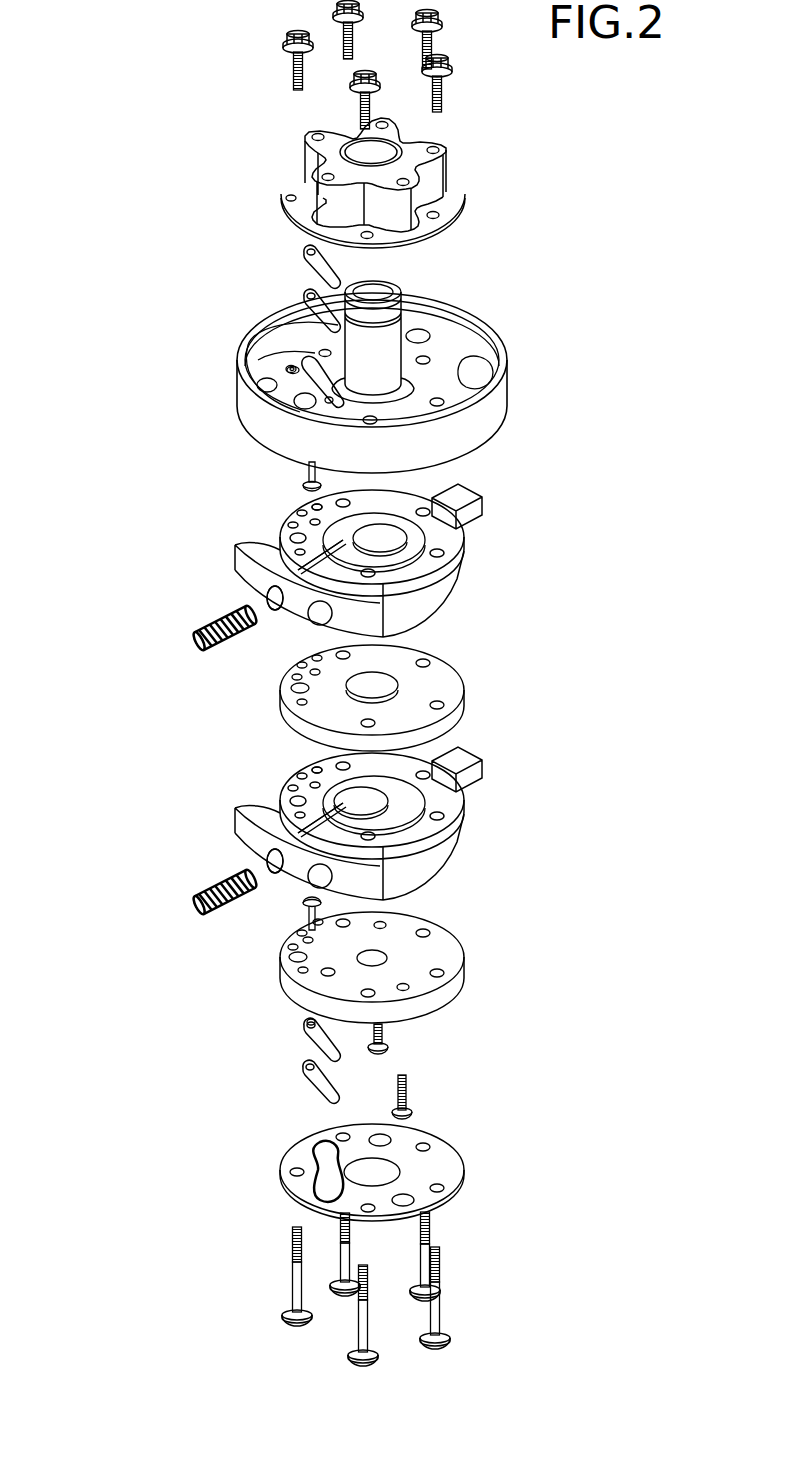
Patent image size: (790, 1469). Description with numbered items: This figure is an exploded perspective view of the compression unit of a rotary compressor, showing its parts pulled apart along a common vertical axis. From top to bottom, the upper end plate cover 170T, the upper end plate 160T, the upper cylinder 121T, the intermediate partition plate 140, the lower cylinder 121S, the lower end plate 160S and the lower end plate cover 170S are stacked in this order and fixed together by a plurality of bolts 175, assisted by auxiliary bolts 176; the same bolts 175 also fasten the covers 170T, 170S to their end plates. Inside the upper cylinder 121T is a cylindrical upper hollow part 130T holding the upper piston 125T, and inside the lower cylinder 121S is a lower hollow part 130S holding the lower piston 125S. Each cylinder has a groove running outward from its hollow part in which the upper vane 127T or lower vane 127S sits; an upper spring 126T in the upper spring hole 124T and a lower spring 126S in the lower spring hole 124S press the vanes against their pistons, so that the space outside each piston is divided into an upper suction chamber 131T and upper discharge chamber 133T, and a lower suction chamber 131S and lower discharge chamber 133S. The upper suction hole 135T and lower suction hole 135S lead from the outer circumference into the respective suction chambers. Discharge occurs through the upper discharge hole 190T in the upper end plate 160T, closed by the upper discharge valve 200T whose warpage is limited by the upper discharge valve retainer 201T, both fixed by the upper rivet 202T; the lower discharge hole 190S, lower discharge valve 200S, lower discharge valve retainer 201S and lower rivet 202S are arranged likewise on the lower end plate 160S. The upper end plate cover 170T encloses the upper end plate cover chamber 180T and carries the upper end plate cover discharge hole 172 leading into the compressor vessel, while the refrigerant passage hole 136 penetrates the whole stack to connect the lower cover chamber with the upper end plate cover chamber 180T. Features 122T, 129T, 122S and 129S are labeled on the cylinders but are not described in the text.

The bolts 175 is at (444, 98).
The upper end plate cover discharge hole 172 is at (318, 134).
The upper end plate cover 170T is at (455, 170).
The upper end plate cover chamber 180T is at (422, 243).
The upper discharge valve retainer 201T is at (302, 262).
The upper discharge valve 200T is at (302, 300).
The refrigerant passage hole 136 is at (291, 368).
The upper discharge hole 190T is at (314, 389).
The upper rivet 202T is at (311, 463).
The upper end plate 160T is at (507, 388).
The upper piston 125T is at (325, 507).
The upper vane 127T is at (326, 563).
The top shoe slot 129T is at (345, 586).
The upper spring 126T is at (200, 641).
The upper spring hole 124T is at (278, 607).
The upper suction hole 135T is at (292, 686).
The upper cylinder 121T is at (464, 556).
The upper suction chamber 131T is at (404, 583).
The upper discharge chamber 133T is at (386, 556).
The upper hollow part 130T is at (503, 570).
The top brake shoe 122T is at (385, 622).
The intermediate partition plate 140 is at (466, 707).
The lower piston 125S is at (328, 773).
The lower vane 127S is at (300, 830).
The bottom shoe slot 129S is at (345, 855).
The lower spring 126S is at (200, 913).
The lower spring hole 124S is at (278, 878).
The lower suction hole 135S is at (292, 925).
The lower cylinder 121S is at (464, 831).
The lower suction chamber 131S is at (412, 803).
The lower discharge chamber 133S is at (382, 790).
The lower hollow part 130S is at (502, 796).
The bottom brake shoe 122S is at (385, 882).
The lower rivet 202S is at (305, 945).
The lower end plate 160S is at (480, 975).
The auxiliary bolts 176 is at (386, 1033).
The lower discharge hole 190S is at (300, 1020).
The lower discharge valve 200S is at (300, 1048).
The lower discharge valve retainer 201S is at (300, 1085).
The lower end plate cover 170S is at (466, 1170).